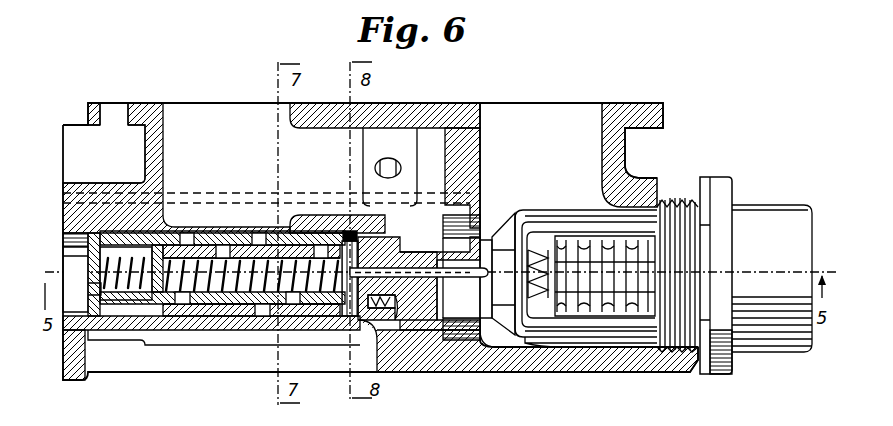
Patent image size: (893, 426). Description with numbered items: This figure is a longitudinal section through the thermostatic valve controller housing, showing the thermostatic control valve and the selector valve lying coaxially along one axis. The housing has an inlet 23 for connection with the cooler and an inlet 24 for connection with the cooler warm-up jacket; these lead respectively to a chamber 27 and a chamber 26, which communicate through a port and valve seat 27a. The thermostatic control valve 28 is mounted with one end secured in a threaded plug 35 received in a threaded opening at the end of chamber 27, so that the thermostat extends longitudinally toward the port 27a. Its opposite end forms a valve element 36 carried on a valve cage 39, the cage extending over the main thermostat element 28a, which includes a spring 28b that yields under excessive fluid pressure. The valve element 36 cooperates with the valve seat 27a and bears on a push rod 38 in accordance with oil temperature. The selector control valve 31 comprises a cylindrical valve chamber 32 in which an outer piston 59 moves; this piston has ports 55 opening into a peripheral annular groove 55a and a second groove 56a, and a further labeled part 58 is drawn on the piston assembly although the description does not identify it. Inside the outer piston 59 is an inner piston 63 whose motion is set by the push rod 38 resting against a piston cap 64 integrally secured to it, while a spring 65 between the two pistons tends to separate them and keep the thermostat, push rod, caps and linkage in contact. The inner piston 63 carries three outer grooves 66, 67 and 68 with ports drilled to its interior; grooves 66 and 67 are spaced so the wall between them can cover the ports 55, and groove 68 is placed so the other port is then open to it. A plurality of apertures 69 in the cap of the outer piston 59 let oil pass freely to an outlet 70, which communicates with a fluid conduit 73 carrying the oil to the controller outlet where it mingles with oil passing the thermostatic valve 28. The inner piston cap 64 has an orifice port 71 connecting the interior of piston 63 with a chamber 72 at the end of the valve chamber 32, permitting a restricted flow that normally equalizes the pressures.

The inlet 23 is at (584, 112).
The inlet 24 is at (211, 112).
The chamber 26 is at (423, 322).
The chamber 27 is at (615, 345).
The communicating port and valve seat 27a is at (480, 236).
The thermostatic control valve 28 is at (558, 236).
The main thermostat element 28a is at (636, 275).
The spring 28b is at (540, 250).
The selector control valve 31 is at (128, 308).
The cylindrical valve chamber 32 is at (72, 374).
The threaded plug 35 is at (685, 230).
The valve element 36 is at (510, 318).
The push rod 38 is at (457, 269).
The valve cage 39 is at (585, 335).
The ports 55 is at (216, 326).
The peripheral annular groove 55a is at (187, 236).
The peripheral annular groove 56a is at (280, 233).
The ring 58 is at (263, 332).
The piston 59 is at (295, 308).
The inner piston 63 is at (182, 302).
The piston cap 64 is at (334, 312).
The spring 65 is at (242, 299).
The outer groove 66 is at (222, 240).
The outer groove 67 is at (258, 238).
The outer groove 68 is at (320, 242).
The apertures 69 is at (95, 289).
The outlet 70 is at (63, 228).
The orifice port 71 is at (379, 214).
The chamber 72 is at (392, 306).
The fluid conduit 73 is at (115, 195).